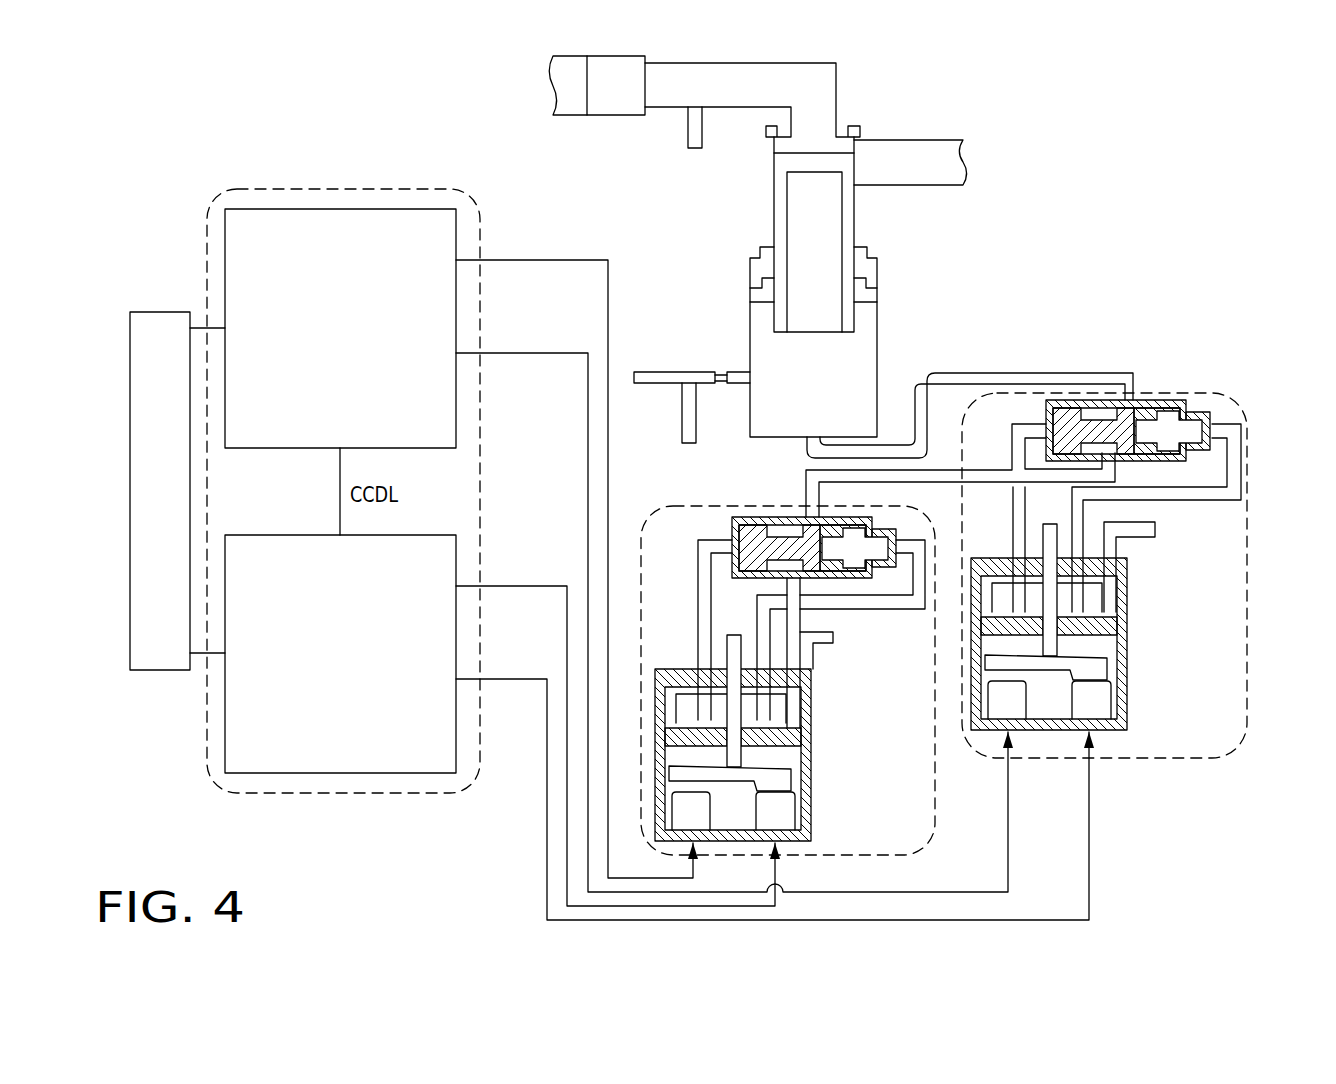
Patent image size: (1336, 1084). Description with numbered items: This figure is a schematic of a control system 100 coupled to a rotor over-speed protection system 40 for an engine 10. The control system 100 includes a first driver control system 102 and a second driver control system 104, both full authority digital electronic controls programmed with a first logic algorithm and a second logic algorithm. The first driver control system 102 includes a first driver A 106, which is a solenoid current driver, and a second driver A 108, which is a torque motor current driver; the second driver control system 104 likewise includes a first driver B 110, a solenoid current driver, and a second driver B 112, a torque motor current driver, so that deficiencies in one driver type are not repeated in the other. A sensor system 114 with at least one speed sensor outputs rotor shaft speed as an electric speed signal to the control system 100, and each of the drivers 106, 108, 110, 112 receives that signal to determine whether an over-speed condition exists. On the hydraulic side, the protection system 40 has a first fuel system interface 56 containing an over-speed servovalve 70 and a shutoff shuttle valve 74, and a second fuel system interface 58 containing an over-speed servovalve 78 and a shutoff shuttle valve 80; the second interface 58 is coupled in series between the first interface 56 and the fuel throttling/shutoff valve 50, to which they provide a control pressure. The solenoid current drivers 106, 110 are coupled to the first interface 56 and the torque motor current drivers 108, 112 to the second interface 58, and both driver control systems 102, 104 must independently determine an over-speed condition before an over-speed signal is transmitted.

The engine 10 is at (1218, 88).
The rotor over-speed protection system 40 is at (1020, 160).
The fuel throttling/shutoff valve 50 is at (877, 343).
The first fuel system interface 56 is at (872, 855).
The second fuel system interface 58 is at (1187, 760).
The over-speed servovalve 70 is at (812, 760).
The shutoff shuttle valve 74 is at (757, 517).
The over-speed servovalve 78 is at (1127, 678).
The shutoff shuttle valve 80 is at (1150, 400).
The control system 100 is at (298, 185).
The first driver control system 102 is at (278, 311).
The second driver control system 104 is at (278, 629).
The first driver A 106 is at (408, 232).
The second driver A 108 is at (424, 322).
The first driver B 110 is at (412, 558).
The second driver B 112 is at (424, 642).
The sensor system 114 is at (180, 497).